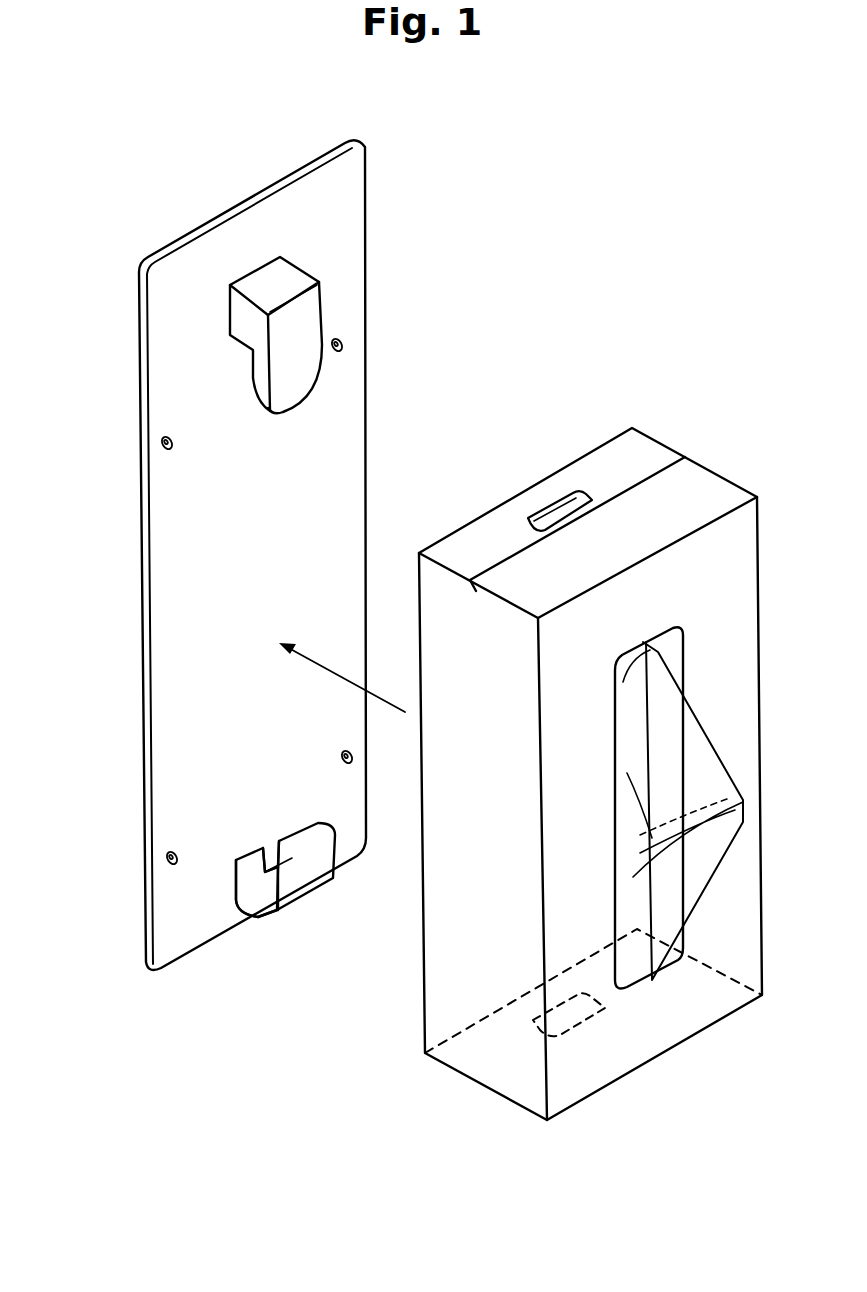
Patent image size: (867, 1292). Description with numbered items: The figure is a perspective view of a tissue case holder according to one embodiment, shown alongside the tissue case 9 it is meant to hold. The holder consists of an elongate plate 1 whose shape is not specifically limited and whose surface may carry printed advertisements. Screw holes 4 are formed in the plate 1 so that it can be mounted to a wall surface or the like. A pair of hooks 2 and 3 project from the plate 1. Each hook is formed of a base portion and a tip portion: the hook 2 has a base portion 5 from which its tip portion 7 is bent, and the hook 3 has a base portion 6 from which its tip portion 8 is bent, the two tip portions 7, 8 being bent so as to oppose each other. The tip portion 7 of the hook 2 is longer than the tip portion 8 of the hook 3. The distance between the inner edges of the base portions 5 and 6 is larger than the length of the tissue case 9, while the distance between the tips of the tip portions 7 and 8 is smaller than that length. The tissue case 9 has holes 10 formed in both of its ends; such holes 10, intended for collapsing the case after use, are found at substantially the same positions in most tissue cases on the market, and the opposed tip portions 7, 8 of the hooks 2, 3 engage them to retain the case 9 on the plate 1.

The elongate plate 1 is at (177, 585).
The hook 2 is at (293, 362).
The hook 3 is at (279, 885).
The screw holes 4 is at (161, 452).
The base portion 5 is at (238, 312).
The base portion 6 is at (247, 892).
The tip portion 7 is at (288, 385).
The tip portion 8 is at (305, 848).
The tissue case 9 is at (455, 960).
The holes 10 is at (568, 508).